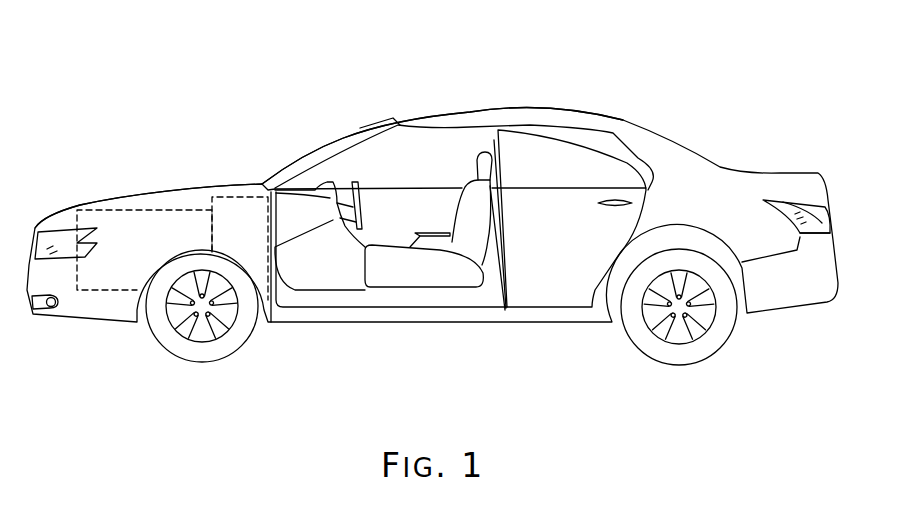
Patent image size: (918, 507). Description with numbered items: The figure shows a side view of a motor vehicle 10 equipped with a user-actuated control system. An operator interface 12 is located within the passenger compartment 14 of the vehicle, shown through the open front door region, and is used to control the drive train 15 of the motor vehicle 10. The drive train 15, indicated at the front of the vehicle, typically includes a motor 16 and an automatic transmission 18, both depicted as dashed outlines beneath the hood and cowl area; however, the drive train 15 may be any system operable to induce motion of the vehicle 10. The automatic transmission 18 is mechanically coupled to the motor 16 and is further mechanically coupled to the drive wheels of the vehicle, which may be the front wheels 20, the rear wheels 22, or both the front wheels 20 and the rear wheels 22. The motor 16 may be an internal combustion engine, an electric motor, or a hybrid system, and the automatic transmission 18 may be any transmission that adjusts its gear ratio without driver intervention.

The motor vehicle 10 is at (208, 78).
The operator interface 12 is at (327, 173).
The passenger compartment 14 is at (460, 127).
The drive train 15 is at (125, 185).
The motor 16 is at (167, 207).
The automatic transmission 18 is at (243, 193).
The front wheels 20 is at (212, 363).
The rear wheels 22 is at (700, 363).